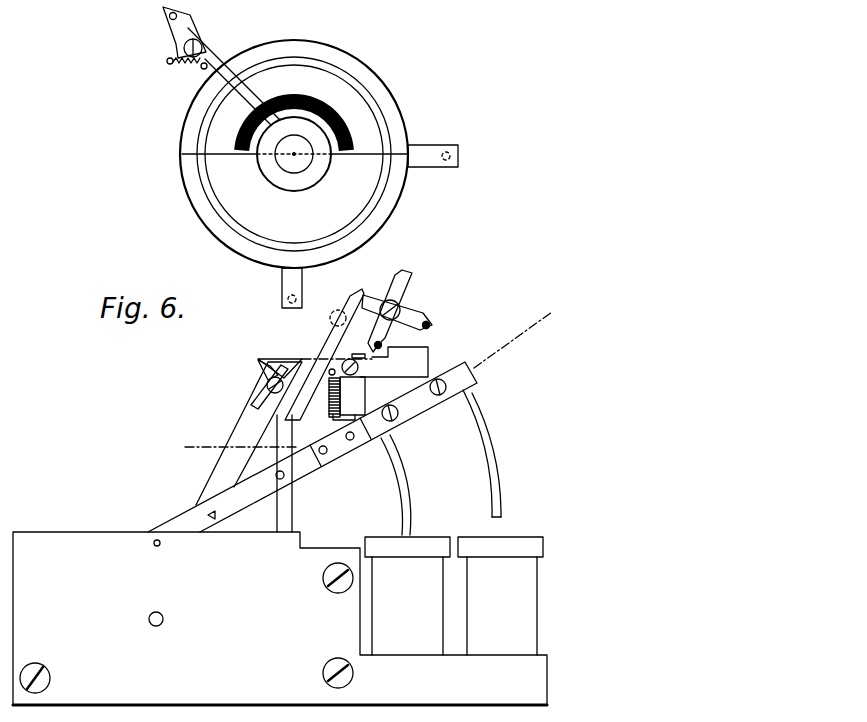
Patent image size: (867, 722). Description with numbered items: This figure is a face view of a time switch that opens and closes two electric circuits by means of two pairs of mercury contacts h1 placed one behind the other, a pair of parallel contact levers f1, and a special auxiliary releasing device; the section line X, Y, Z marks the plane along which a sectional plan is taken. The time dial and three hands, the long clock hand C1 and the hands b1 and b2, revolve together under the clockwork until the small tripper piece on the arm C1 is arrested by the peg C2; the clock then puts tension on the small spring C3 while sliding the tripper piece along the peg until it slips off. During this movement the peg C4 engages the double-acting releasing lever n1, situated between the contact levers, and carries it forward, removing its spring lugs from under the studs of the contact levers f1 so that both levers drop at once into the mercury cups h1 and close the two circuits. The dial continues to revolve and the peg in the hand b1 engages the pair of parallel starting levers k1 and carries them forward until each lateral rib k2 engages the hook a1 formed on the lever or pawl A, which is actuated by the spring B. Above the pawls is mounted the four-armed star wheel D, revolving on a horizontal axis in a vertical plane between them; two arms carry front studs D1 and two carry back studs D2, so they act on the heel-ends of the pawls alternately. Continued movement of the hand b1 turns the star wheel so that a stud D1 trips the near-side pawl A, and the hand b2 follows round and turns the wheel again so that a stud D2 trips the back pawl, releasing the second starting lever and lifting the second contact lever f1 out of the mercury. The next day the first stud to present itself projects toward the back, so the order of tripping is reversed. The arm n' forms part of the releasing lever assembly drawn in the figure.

The clock hand C1 is at (207, 50).
The peg C2 is at (337, 310).
The small spring C3 is at (174, 66).
The peg C4 is at (170, 16).
The clock hand b1 is at (458, 158).
The clock hand b2 is at (282, 286).
The four-armed star wheel D is at (423, 312).
The front studs D1 is at (436, 326).
The back studs D2 is at (403, 266).
The pawl A is at (428, 361).
The screw c is at (358, 354).
The spring B is at (330, 398).
The slide arm n' is at (328, 338).
The double-acting releasing lever n1 is at (295, 510).
The starting lever k1 is at (247, 428).
The lateral rib k2 is at (268, 360).
The hook a1 is at (262, 367).
The contact lever f1 is at (470, 366).
The section line point X is at (233, 448).
The section line point Y is at (301, 437).
The section line point Z is at (519, 335).
The mercury contacts h1 is at (454, 596).